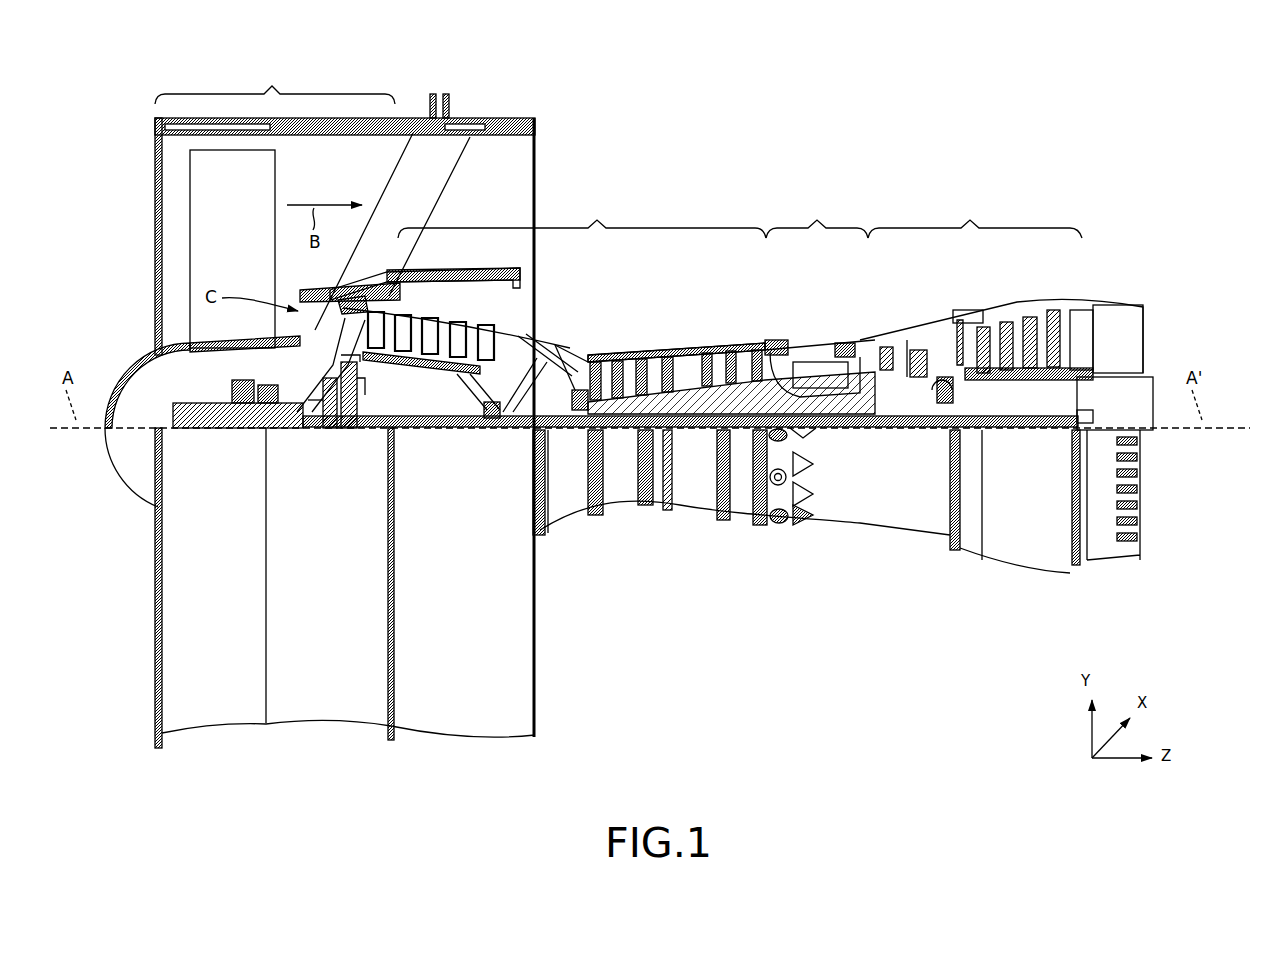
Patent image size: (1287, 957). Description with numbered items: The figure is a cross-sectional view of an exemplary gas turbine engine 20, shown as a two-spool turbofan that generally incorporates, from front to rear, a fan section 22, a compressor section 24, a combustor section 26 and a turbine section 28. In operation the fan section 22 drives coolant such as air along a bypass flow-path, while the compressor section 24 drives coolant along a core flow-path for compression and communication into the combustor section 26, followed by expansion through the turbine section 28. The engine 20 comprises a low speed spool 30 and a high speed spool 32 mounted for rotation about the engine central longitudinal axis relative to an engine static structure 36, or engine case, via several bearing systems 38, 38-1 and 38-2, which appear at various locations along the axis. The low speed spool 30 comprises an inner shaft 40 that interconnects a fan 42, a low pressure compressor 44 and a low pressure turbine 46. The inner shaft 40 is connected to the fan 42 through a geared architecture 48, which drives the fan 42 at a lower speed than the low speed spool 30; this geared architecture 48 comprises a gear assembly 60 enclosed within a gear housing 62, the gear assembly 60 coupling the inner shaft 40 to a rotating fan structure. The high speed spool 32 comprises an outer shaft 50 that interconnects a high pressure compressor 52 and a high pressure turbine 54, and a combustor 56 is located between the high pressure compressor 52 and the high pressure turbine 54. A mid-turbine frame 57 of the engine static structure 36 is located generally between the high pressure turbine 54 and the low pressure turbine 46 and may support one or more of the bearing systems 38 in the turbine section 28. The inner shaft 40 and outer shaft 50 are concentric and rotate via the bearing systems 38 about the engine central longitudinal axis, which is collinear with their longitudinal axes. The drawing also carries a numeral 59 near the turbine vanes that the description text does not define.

The gas turbine engine 20 is at (870, 158).
The fan section 22 is at (275, 83).
The compressor section 24 is at (582, 215).
The combustor section 26 is at (817, 215).
The turbine section 28 is at (975, 215).
The low speed spool 30 is at (705, 442).
The high speed spool 32 is at (742, 400).
The engine static structure 36 is at (325, 705).
The bearing system 38 is at (930, 430).
The bearing system 38-1 is at (242, 430).
The bearing system 38-2 is at (490, 430).
The inner shaft 40 is at (555, 440).
The fan 42 is at (232, 249).
The low pressure compressor 44 is at (478, 322).
The low pressure turbine 46 is at (1015, 310).
The geared architecture 48 is at (356, 445).
The outer shaft 50 is at (822, 430).
The high pressure compressor 52 is at (682, 398).
The high pressure turbine 54 is at (885, 346).
The combustor 56 is at (812, 368).
The mid-turbine frame 57 is at (913, 327).
The turbine vane 59 is at (932, 332).
The gear assembly 60 is at (360, 412).
The gear housing 62 is at (363, 382).